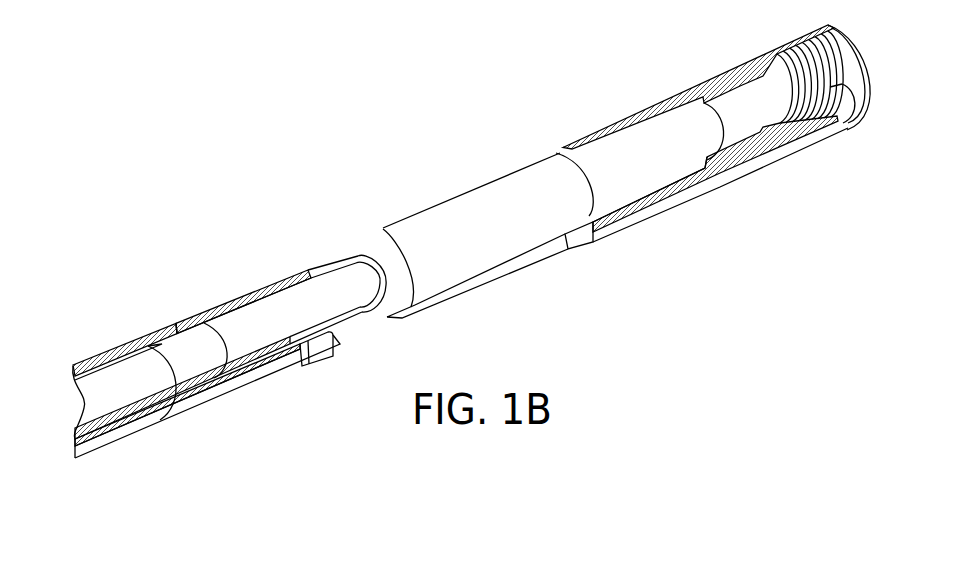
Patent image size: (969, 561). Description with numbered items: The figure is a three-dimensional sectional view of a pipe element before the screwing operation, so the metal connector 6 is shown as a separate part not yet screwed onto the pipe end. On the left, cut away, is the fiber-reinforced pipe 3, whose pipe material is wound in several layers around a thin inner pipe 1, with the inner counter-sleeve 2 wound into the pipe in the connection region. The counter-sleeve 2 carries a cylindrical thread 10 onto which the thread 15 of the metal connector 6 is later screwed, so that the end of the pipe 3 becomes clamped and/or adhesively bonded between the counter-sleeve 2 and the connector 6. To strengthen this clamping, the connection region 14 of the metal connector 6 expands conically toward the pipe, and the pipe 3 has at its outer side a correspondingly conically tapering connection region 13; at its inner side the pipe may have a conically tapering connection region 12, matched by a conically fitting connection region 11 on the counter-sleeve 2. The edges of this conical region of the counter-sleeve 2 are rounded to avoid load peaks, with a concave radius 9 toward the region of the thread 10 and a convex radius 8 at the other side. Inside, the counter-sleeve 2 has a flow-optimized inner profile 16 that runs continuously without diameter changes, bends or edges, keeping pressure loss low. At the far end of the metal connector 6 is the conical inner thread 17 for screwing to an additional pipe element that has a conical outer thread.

The inner pipe 1 is at (100, 355).
The counter-sleeve 2 is at (175, 340).
The pipe 3 is at (128, 442).
The metal connector 6 is at (660, 207).
The convex radius 8 is at (212, 367).
The concave radius 9 is at (292, 360).
The cylindrical thread 10 is at (337, 257).
The connection region 11 is at (230, 305).
The connection region 12 is at (230, 305).
The connection region 13 is at (260, 382).
The connection region 14 is at (635, 118).
The thread 15 is at (745, 115).
The inner profile 16 is at (173, 413).
The conical inner thread 17 is at (857, 130).